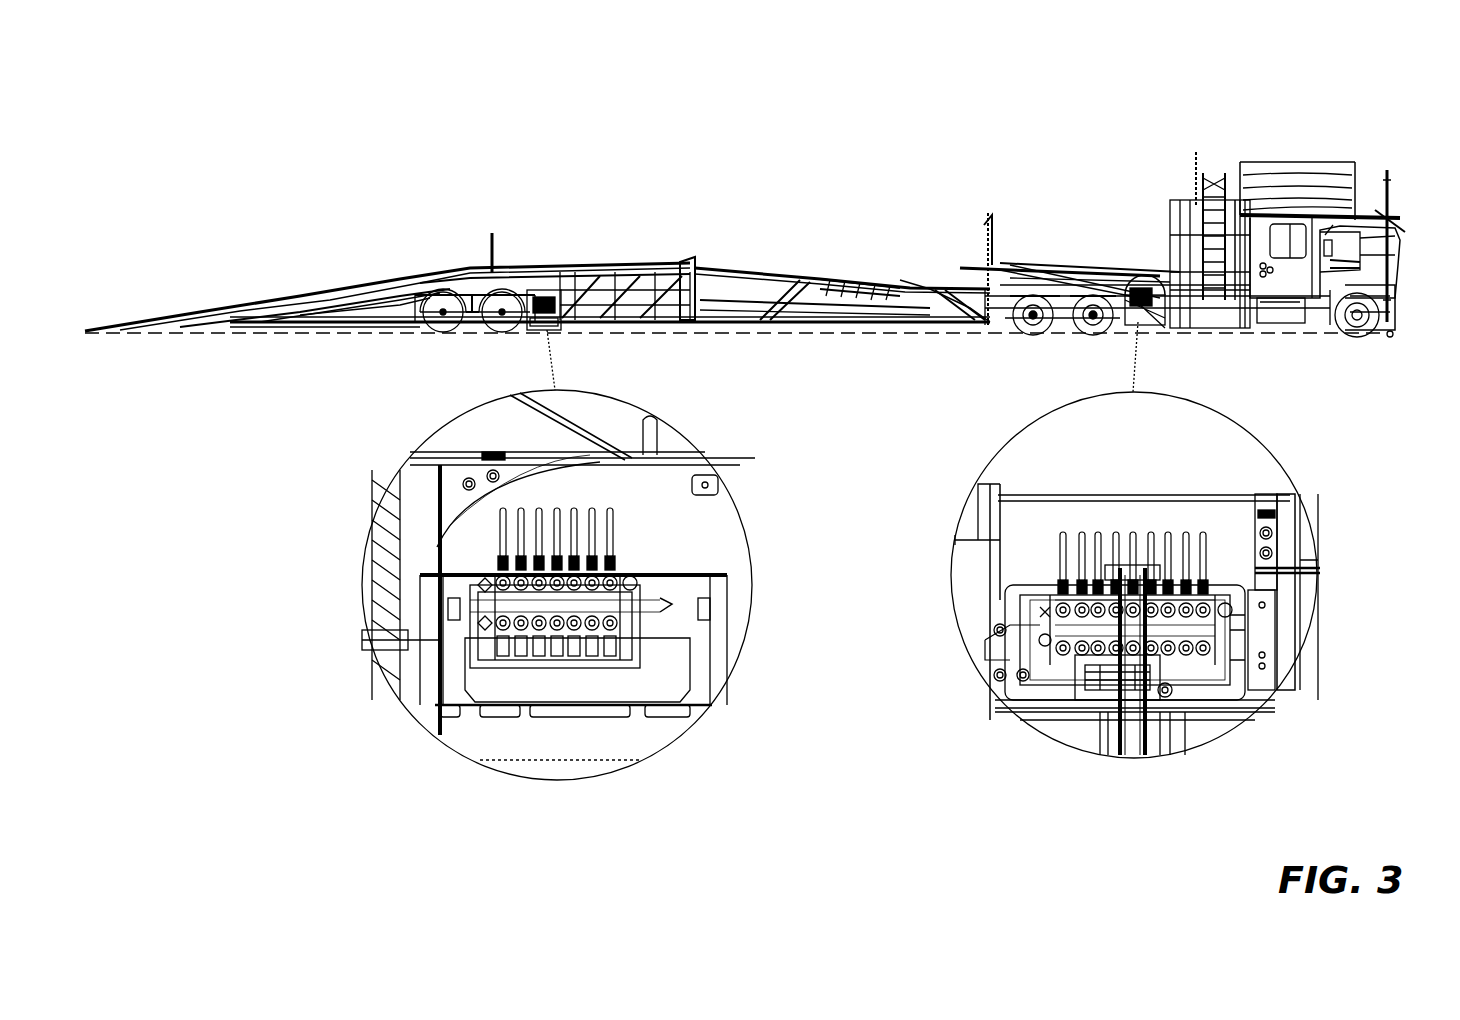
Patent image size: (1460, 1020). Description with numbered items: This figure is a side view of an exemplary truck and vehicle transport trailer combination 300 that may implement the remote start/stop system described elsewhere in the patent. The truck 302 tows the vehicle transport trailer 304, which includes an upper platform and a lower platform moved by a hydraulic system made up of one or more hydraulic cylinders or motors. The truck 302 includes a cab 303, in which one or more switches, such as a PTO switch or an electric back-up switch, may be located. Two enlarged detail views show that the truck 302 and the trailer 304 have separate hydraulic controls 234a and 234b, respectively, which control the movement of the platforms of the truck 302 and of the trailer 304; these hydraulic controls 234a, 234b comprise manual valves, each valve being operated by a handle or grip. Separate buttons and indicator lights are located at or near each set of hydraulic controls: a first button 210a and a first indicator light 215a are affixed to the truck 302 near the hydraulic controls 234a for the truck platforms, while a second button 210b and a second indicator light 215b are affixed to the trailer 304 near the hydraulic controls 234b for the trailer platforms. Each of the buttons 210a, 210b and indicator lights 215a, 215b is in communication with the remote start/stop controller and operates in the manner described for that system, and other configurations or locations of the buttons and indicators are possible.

The vehicle system with tractor and trailer 300 is at (1267, 103).
The truck 302 is at (1115, 193).
The cab 303 is at (1285, 272).
The vehicle transport trailer 304 is at (467, 208).
The first button 210a is at (1275, 531).
The second button 210b is at (488, 474).
The first indicator light 215a is at (1276, 553).
The second indicator light 215b is at (463, 484).
The hydraulic controls 234a is at (1058, 540).
The hydraulic controls 234b is at (608, 518).